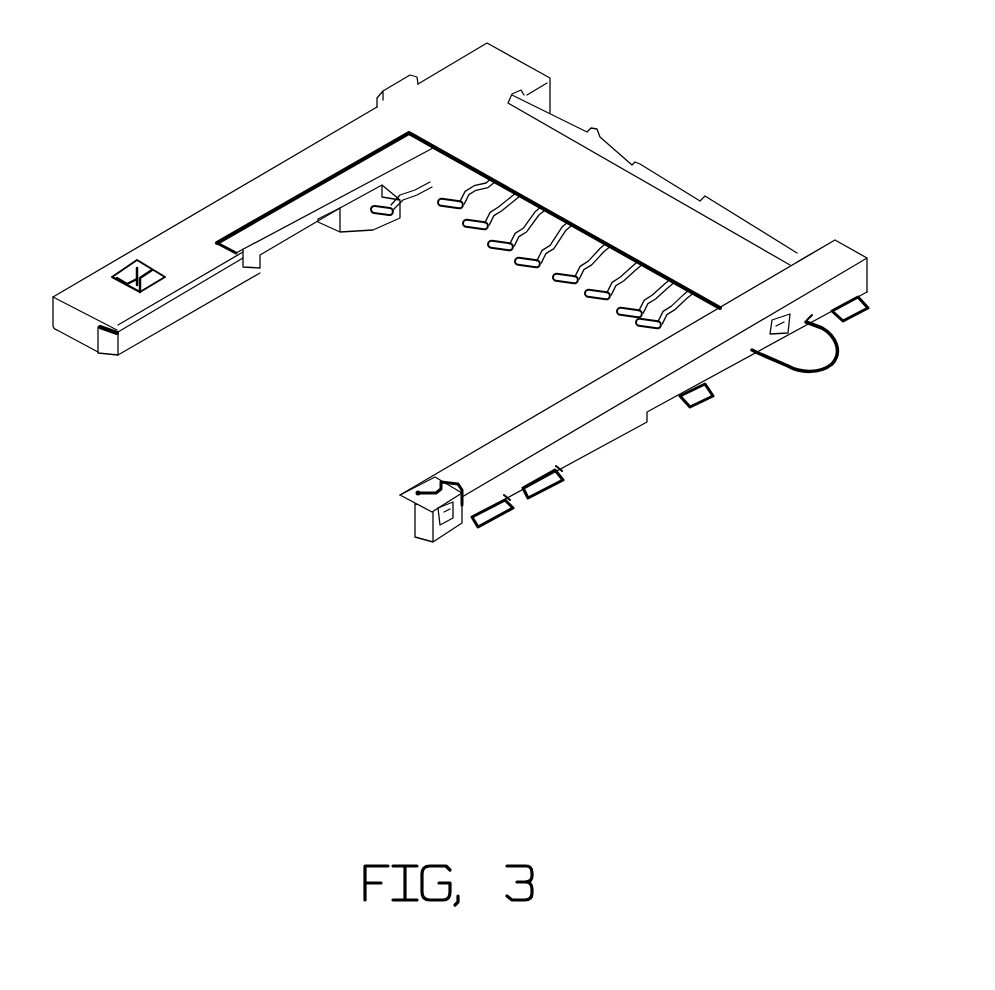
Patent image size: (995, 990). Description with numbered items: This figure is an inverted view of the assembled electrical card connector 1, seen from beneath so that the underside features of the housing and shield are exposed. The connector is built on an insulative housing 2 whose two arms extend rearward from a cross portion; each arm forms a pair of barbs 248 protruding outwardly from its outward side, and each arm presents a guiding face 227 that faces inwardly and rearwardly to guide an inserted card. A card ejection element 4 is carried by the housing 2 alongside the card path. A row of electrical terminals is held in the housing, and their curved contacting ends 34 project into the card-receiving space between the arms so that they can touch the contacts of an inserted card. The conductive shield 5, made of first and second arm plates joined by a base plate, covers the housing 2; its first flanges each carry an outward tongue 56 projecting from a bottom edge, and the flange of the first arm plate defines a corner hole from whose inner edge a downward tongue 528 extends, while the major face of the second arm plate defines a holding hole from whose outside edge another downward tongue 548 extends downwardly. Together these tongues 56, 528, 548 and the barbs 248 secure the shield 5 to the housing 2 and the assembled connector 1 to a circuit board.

The electrical card connector 1 is at (440, 315).
The insulative housing 2 is at (457, 291).
The card ejection element 4 is at (365, 222).
The conductive shield 5 is at (522, 140).
The curved contacting end 34 is at (512, 246).
The outward tongue 56 is at (393, 83).
The guiding face 227 is at (107, 343).
The barbs 248 is at (780, 328).
The downward tongue 528 is at (433, 493).
The downward tongue 548 is at (135, 264).